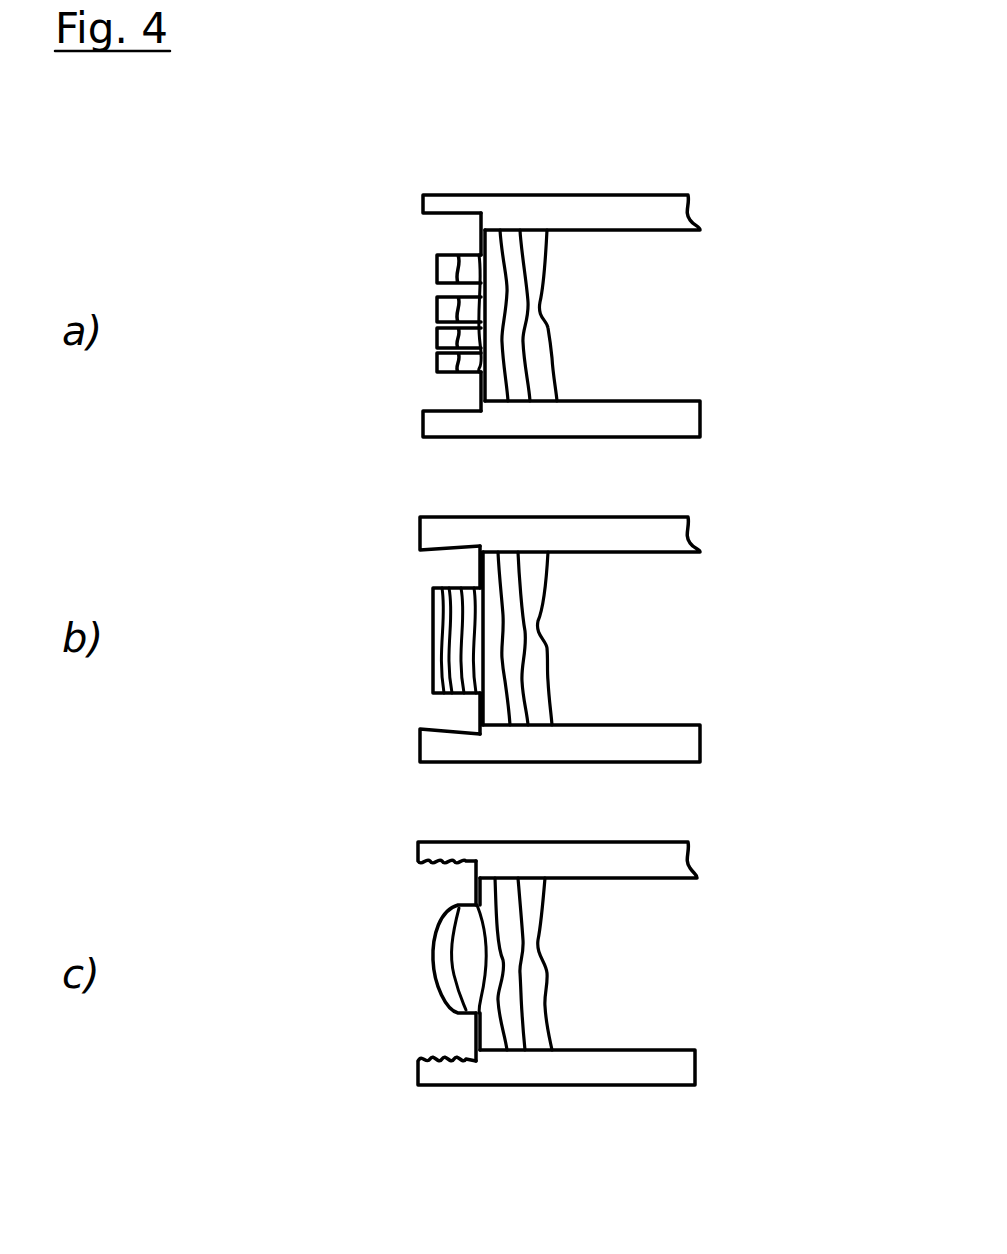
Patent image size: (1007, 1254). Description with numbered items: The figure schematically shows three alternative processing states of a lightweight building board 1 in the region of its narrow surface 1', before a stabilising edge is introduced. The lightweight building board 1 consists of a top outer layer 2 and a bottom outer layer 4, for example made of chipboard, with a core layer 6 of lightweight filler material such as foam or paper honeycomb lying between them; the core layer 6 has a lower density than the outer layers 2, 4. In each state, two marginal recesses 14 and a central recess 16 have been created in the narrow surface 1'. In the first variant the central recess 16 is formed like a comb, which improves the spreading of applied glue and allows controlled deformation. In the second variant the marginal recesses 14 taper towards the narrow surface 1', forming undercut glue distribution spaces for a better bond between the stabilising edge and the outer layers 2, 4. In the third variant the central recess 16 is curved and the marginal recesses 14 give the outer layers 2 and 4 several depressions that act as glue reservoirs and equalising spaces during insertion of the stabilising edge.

The lightweight building board 1 is at (792, 557).
The narrow surface 1' is at (295, 477).
The top outer layer 2 is at (657, 268).
The bottom outer layer 4 is at (705, 353).
The core layer 6 is at (583, 330).
The marginal recesses 14 is at (422, 595).
The central recess 16 is at (432, 318).